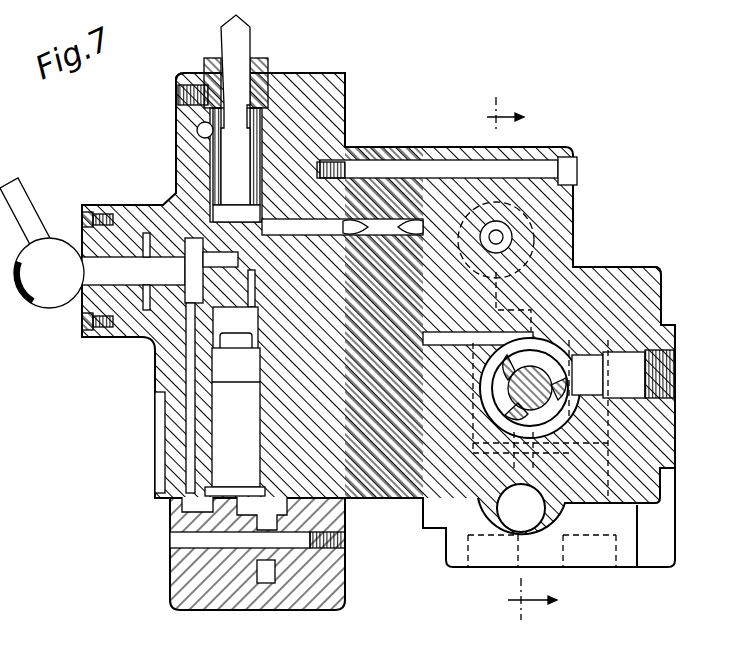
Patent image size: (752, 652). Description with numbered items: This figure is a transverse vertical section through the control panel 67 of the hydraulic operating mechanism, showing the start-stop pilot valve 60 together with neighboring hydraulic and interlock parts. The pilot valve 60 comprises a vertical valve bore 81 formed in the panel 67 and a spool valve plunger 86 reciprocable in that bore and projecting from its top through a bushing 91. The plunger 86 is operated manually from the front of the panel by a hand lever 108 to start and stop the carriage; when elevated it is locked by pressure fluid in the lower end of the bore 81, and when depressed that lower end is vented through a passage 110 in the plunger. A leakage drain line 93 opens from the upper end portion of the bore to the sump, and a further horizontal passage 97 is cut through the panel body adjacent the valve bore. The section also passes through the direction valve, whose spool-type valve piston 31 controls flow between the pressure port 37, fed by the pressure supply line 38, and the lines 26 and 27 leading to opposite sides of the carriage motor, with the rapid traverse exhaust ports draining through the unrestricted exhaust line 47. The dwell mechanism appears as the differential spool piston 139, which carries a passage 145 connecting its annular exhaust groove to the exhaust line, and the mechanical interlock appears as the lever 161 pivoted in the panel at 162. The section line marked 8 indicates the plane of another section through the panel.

The section line 8- 8 is at (528, 358).
The fluid supply and discharge line 26 is at (614, 478).
The fluid supply and discharge line 27 is at (624, 368).
The valve piston 31 is at (540, 420).
The pressure port 37 is at (548, 360).
The pressure supply line 38 is at (622, 352).
The unrestricted exhaust line 47 is at (503, 527).
The pilot valve 60 is at (272, 62).
The panel 67 is at (165, 110).
The valve bore 81 is at (262, 153).
The spool valve plunger 86 is at (250, 38).
The bushing 91 is at (214, 58).
The leakage drain line 93 is at (197, 131).
The channel 97 is at (320, 219).
The hand lever 108 is at (22, 200).
The passage 110 is at (256, 288).
The differential spool piston 139 is at (520, 212).
The passage 145 is at (499, 245).
The lever 161 is at (258, 566).
The pivot 162 is at (170, 543).